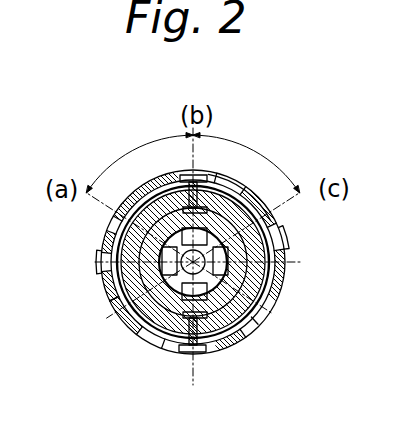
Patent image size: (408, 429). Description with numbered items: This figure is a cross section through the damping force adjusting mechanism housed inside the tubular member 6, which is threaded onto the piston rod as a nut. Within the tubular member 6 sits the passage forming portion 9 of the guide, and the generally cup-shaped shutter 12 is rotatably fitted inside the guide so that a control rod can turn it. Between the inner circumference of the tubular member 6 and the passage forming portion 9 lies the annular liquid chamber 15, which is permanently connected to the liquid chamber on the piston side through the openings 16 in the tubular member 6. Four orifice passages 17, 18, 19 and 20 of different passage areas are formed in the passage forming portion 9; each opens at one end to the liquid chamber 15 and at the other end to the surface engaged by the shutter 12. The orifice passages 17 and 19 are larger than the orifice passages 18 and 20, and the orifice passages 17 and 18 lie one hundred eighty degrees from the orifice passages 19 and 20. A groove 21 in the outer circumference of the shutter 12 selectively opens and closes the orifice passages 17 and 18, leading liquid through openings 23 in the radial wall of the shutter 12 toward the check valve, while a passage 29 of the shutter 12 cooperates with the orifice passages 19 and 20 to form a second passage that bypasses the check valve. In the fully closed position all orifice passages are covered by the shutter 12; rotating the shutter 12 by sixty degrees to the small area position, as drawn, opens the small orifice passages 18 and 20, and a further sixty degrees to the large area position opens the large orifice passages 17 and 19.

The tubular member 6 is at (283, 300).
The passage forming portion 9 is at (146, 330).
The shutter 12 is at (118, 238).
The annular liquid chamber 15 is at (110, 266).
The openings 16 is at (205, 177).
The orifice passage 17 is at (124, 295).
The orifice passage 18 is at (222, 349).
The orifice passage 19 is at (286, 231).
The orifice passage 20 is at (237, 190).
The groove 21 is at (248, 320).
The openings 23 is at (274, 265).
The passage 29 is at (179, 208).